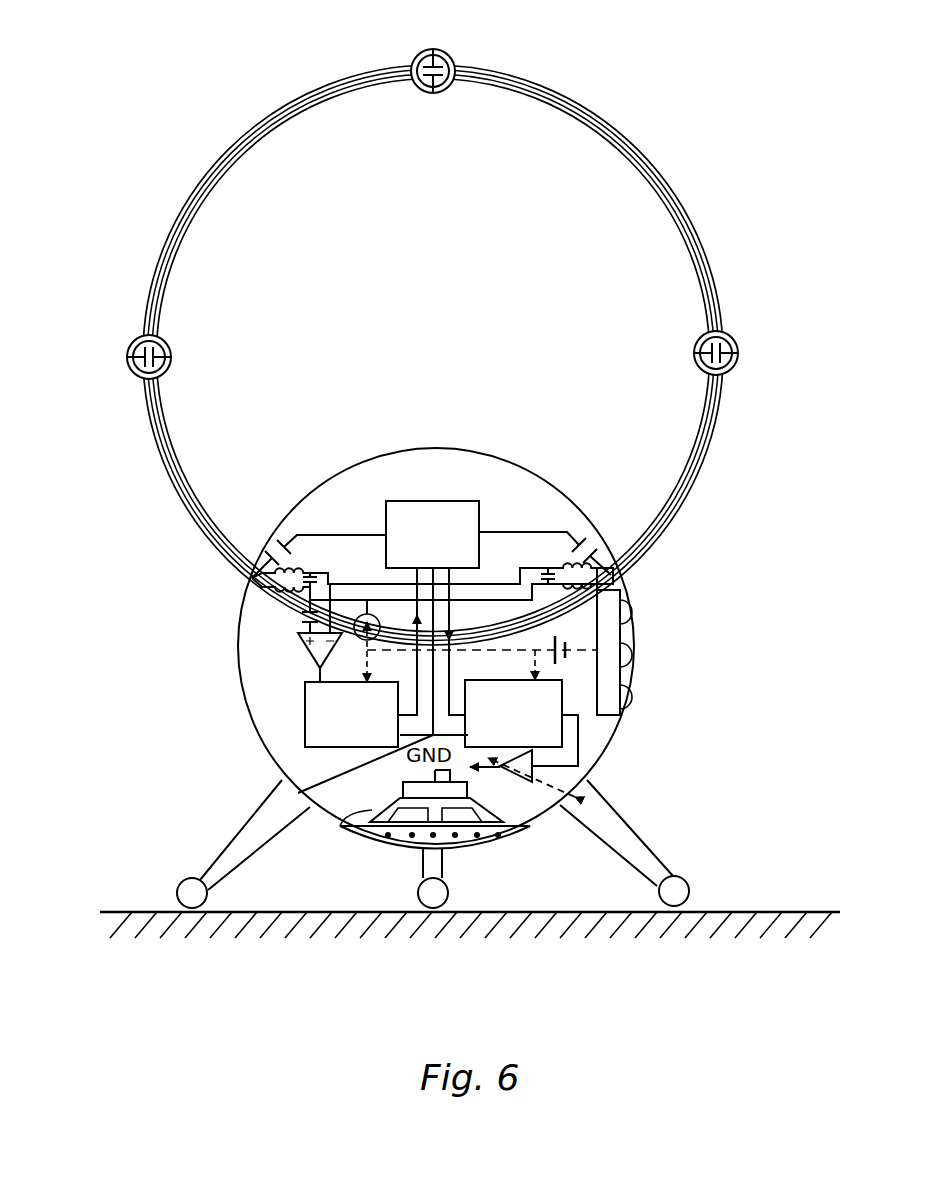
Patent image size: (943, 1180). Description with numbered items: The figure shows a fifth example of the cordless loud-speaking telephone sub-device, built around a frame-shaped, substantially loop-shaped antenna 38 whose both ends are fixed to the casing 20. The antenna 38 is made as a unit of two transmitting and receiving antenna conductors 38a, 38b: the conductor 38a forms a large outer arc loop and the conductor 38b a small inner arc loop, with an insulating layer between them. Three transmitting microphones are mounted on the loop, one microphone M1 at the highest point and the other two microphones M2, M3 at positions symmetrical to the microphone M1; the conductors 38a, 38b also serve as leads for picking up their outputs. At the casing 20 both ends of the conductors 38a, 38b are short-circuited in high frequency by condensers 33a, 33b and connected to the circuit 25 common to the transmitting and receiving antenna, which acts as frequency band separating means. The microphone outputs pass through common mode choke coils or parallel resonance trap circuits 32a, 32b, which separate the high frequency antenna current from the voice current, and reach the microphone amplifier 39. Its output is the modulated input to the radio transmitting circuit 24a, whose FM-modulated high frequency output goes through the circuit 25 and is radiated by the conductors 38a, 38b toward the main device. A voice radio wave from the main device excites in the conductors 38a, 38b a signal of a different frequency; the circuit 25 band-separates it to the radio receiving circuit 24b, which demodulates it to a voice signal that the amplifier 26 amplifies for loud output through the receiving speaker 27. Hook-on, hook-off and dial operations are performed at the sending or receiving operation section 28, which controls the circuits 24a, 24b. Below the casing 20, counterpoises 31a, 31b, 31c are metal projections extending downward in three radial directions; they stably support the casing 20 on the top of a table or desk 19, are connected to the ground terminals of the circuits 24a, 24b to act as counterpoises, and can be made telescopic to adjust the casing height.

The table or desk 19 is at (735, 906).
The casing 20 is at (348, 478).
The radio transmitting circuit 24a is at (313, 735).
The radio receiving circuit 24b is at (560, 730).
The circuit common to the transmitting and receiving antenna 25 is at (458, 502).
The amplifier 26 is at (540, 796).
The receiving speaker 27 is at (340, 822).
The sending or receiving operation section 28 is at (636, 652).
The counterpoise 31a is at (228, 848).
The counterpoise 31b is at (632, 838).
The counterpoise 31c is at (443, 862).
The common mode choke coil or parallel resonance trap circuit 32a is at (283, 597).
The common mode choke coil or parallel resonance trap circuit 32b is at (622, 606).
The condenser 33a is at (270, 536).
The condenser 33b is at (586, 530).
The frame-shaped loop antenna 38 is at (482, 355).
The transmitting and receiving antenna conductor 38a is at (682, 200).
The transmitting and receiving antenna conductor 38b is at (688, 247).
The microphone amplifier 39 is at (313, 656).
The transmitting microphone M1 is at (450, 60).
The transmitting microphone M2 is at (134, 372).
The transmitting microphone M3 is at (733, 366).